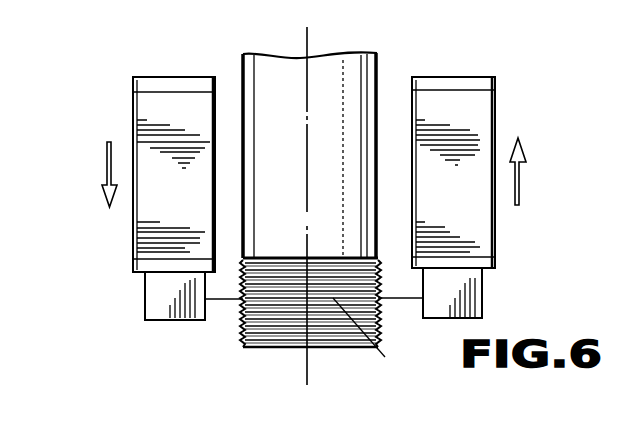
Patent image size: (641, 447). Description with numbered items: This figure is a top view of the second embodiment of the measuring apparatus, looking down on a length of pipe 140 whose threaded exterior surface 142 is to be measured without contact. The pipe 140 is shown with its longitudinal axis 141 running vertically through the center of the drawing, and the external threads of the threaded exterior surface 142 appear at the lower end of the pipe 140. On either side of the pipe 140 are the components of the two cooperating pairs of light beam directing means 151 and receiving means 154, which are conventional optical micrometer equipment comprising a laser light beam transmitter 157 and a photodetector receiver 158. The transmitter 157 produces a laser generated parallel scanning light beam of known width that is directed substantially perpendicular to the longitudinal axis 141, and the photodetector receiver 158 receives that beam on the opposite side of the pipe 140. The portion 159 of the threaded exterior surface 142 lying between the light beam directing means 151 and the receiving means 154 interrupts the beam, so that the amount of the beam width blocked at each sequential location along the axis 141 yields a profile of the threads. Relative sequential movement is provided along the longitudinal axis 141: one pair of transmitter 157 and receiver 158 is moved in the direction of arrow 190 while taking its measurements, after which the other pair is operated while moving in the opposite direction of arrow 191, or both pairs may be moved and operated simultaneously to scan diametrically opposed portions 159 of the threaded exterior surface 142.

The length of pipe 140 is at (377, 78).
The longitudinal axis 141 is at (308, 147).
The threaded exterior surface 142 is at (247, 332).
The light beam directing means 151 is at (482, 298).
The receiving means 154 is at (155, 297).
The laser light beam transmitter 157 is at (500, 253).
The photodetector receiver 158 is at (128, 233).
The portion of threaded surface 159 is at (374, 342).
The arrow 190 is at (105, 155).
The arrow 191 is at (522, 178).